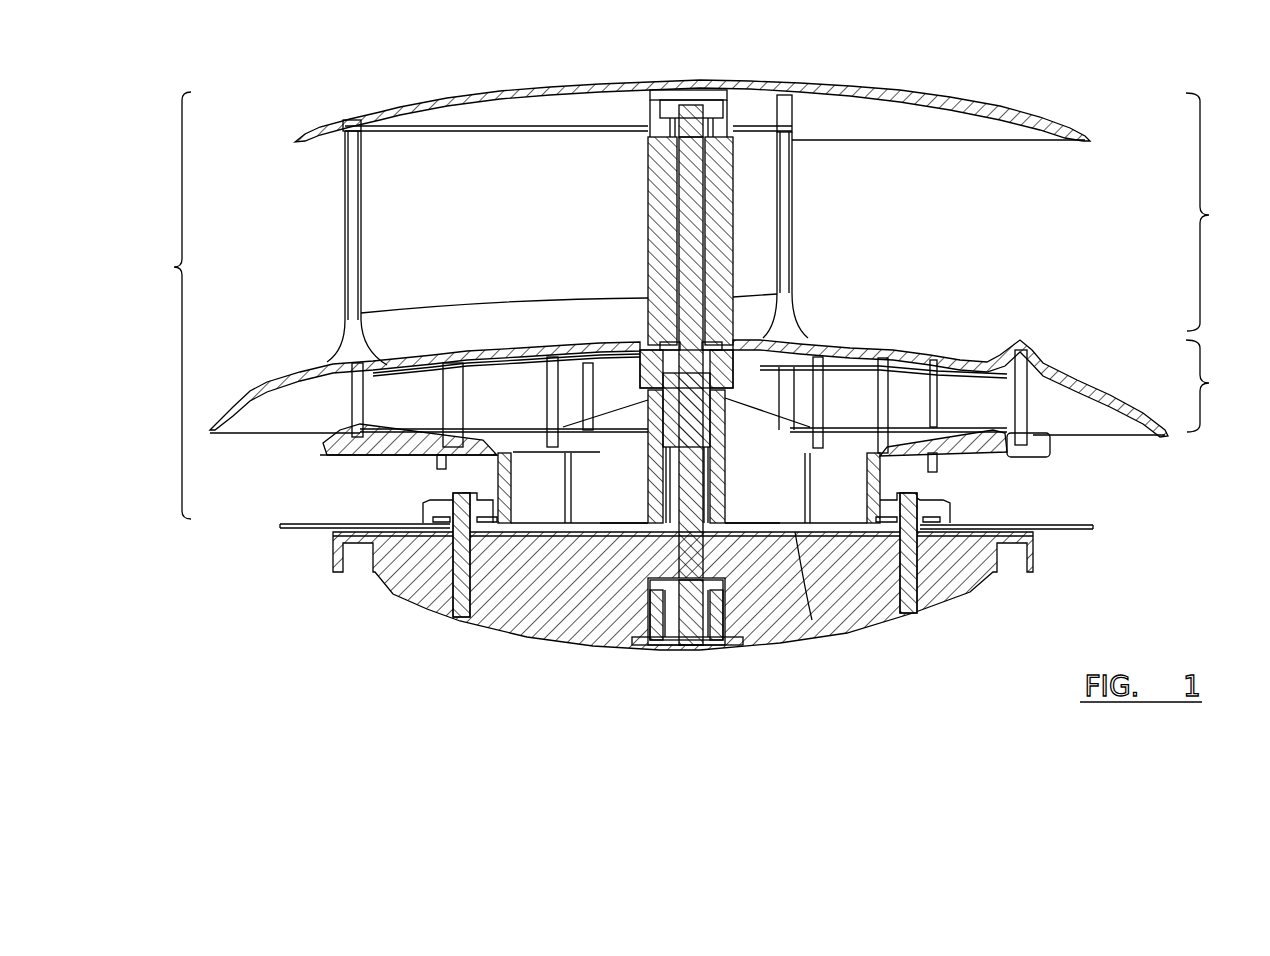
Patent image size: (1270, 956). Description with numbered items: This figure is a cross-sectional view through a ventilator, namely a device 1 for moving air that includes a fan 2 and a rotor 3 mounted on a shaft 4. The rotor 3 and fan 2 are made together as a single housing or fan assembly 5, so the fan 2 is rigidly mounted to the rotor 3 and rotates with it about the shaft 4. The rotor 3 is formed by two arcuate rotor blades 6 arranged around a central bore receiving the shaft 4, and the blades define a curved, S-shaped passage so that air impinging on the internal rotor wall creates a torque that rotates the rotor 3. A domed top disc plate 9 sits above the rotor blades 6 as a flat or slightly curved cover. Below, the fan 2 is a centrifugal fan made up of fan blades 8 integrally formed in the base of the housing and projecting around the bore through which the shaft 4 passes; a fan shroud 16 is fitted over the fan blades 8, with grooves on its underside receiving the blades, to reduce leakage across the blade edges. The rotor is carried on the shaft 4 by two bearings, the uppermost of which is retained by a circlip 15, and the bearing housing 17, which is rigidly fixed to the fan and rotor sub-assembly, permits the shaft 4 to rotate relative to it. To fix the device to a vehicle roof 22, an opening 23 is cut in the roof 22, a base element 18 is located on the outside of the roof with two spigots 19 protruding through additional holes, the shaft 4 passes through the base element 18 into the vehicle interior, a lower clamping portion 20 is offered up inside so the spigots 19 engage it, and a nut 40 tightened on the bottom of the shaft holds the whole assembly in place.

The device for moving air 1 is at (376, 617).
The fan 2 is at (1213, 386).
The rotor 3 is at (1213, 212).
The shaft 4 is at (690, 230).
The fan assembly 5 is at (165, 305).
The rotor blades 6 is at (480, 186).
The fan blades 8 is at (822, 387).
The domed top disc plate 9 is at (905, 88).
The circlip 15 is at (658, 102).
The fan shroud 16 is at (268, 381).
The bearing housing 17 is at (724, 432).
The base element 18 is at (491, 483).
The spigots 19 is at (461, 570).
The lower clamping portion 20 is at (536, 643).
The vehicle roof 22 is at (1073, 538).
The opening 23 is at (808, 620).
The nut 40 is at (676, 650).